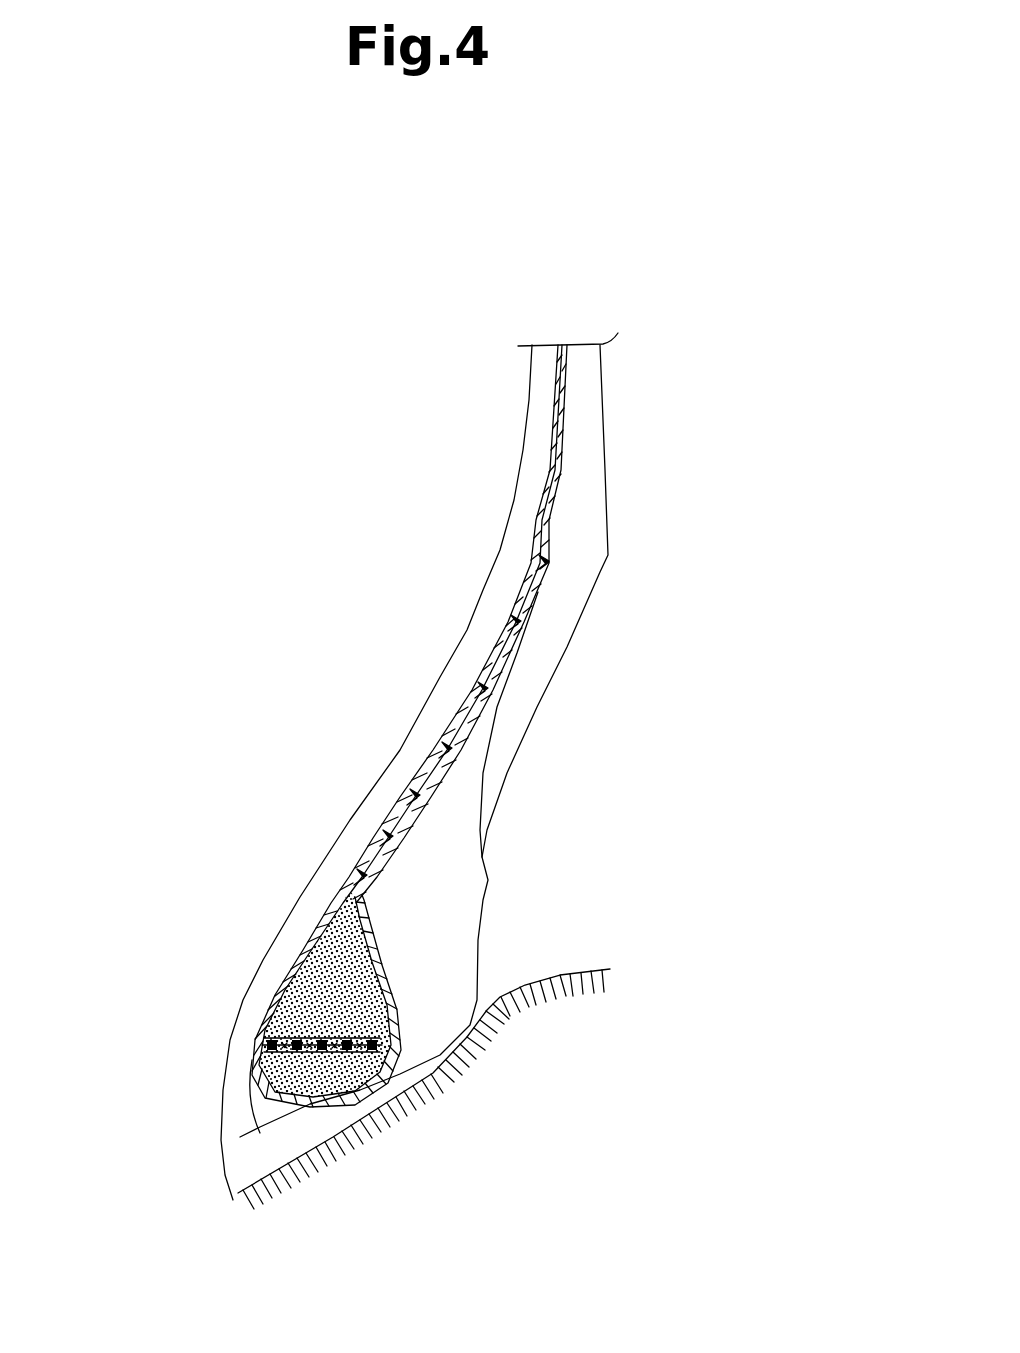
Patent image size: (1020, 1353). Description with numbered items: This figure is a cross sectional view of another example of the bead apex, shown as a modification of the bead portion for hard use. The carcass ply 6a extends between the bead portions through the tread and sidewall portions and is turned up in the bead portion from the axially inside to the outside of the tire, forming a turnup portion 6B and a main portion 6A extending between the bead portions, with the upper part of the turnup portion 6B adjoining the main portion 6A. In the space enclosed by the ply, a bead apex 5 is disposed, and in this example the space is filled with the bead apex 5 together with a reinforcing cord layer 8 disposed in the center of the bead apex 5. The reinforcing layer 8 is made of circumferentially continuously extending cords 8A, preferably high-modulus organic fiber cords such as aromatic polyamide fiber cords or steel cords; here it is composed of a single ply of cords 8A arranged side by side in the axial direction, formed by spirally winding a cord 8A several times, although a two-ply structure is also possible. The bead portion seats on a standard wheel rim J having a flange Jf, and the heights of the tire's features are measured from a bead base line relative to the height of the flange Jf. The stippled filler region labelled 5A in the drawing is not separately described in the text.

The bead apex 5 is at (293, 938).
The bead filler 5A is at (292, 983).
The carcass ply 6a is at (569, 726).
The main portion 6A is at (548, 492).
The turnup portion 6B is at (540, 588).
The reinforcing cord layer 8 is at (263, 1048).
The cords 8A is at (240, 1137).
The flange Jf is at (468, 1089).
The standard wheel rim J is at (560, 972).